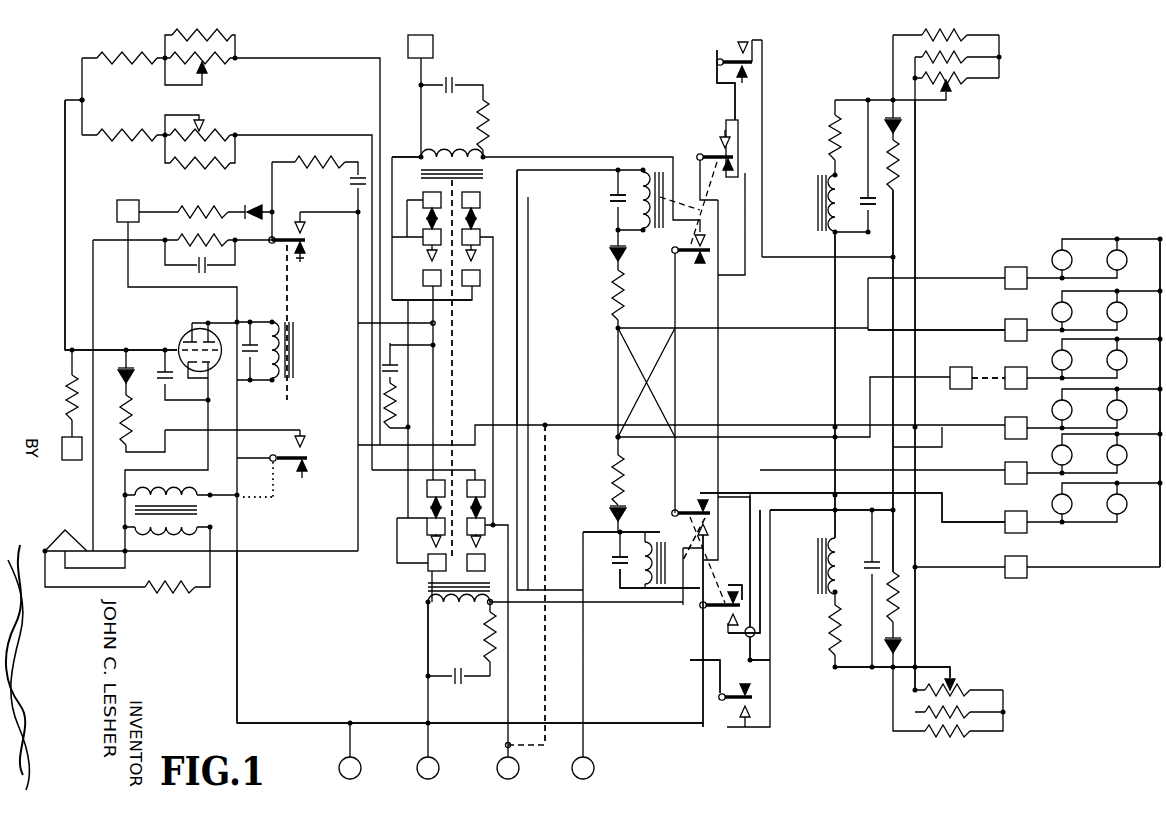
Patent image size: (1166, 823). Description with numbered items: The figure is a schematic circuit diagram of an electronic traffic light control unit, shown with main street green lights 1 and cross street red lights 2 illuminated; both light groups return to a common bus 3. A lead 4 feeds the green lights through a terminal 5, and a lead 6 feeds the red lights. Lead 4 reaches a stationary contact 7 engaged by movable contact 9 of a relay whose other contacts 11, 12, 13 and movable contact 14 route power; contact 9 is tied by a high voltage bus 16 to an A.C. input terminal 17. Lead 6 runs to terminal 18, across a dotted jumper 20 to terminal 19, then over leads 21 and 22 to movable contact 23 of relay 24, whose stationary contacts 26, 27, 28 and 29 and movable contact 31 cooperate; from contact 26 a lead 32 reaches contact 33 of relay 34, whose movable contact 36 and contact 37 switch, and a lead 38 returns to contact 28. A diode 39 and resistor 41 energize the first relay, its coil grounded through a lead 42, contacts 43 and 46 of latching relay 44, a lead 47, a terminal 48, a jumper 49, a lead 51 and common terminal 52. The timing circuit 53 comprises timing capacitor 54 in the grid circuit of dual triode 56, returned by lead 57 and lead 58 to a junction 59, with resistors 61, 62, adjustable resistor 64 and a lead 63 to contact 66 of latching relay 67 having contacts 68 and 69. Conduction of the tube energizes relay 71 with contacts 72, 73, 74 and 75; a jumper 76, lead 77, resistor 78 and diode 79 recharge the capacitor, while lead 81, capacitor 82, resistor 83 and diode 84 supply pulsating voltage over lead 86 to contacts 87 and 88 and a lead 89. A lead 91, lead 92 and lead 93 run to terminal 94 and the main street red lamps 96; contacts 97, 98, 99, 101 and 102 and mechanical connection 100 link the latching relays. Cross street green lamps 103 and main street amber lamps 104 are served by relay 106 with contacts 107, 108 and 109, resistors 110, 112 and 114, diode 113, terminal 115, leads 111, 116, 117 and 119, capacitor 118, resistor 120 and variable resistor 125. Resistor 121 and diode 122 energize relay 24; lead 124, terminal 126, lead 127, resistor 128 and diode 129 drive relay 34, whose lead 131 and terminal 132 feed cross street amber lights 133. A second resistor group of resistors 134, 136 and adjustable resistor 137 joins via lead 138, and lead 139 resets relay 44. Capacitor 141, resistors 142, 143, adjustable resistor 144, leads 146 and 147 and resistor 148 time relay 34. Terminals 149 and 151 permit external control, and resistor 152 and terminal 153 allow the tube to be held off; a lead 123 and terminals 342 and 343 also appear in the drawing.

The green lights 1 is at (1102, 398).
The red lights 2 is at (1107, 347).
The common bus 3 is at (1160, 382).
The lead 4 is at (724, 632).
The terminal 5 is at (1014, 416).
The lead 6 is at (1061, 378).
The stationary contact 7 is at (704, 618).
The first movable contact 9 is at (738, 614).
The stationary contact 11 is at (738, 590).
The stationary contact 12 is at (710, 526).
The stationary contact 13 is at (701, 502).
The movable contact 14 is at (674, 512).
The high voltage bus 16 is at (237, 624).
The A.C. input terminal 17 is at (360, 758).
The terminal 18 is at (1014, 366).
The terminal 19 is at (966, 360).
The jumper 20 is at (984, 376).
The lead 21 is at (640, 437).
The lead 22 is at (669, 364).
The movable contact 23 is at (675, 264).
The relay 24 is at (636, 217).
The stationary contact 26 is at (700, 268).
The stationary contact 27 is at (707, 242).
The stationary contact 28 is at (729, 164).
The stationary contact 29 is at (724, 140).
The movable contact 31 is at (700, 154).
The lead 32 is at (728, 159).
The stationary contact 33 is at (746, 70).
The relay 34 is at (842, 192).
The movable contact 36 is at (718, 60).
The stationary contact 37 is at (740, 42).
The lead 38 is at (732, 102).
The diode 39 is at (614, 508).
The resistor 41 is at (614, 472).
The lead 42 is at (527, 280).
The stationary contact 43 is at (478, 195).
The latching relay 44 is at (452, 152).
The movable contact 46 is at (480, 234).
The lead 47 is at (499, 646).
The terminal 48 is at (518, 768).
The jumper 49 is at (546, 493).
The lead 51 is at (92, 314).
The common terminal 52 is at (1022, 556).
The timing circuit 53 is at (190, 326).
The timing capacitor 54 is at (136, 394).
The dual triode 56 is at (178, 324).
The lead 57 is at (160, 480).
The lead 58 is at (56, 199).
The junction 59 is at (90, 100).
The resistor 61 is at (118, 126).
The resistor 62 is at (191, 170).
The lead 63 is at (291, 136).
The adjustable resistor 64 is at (212, 122).
The stationary contact 66 is at (476, 480).
The latching relay 67 is at (447, 639).
The movable contact 68 is at (482, 508).
The stationary contact 69 is at (475, 546).
The relay 71 is at (265, 335).
The stationary contact 72 is at (304, 441).
The movable contact 73 is at (306, 460).
The movable contact 74 is at (309, 242).
The stationary contact 75 is at (307, 228).
The jumper 76 is at (278, 497).
The lead 77 is at (246, 428).
The resistor 78 is at (150, 423).
The diode 79 is at (150, 376).
The lead 81 is at (240, 297).
The capacitor 82 is at (122, 198).
The resistor 83 is at (204, 204).
The diode 84 is at (252, 207).
The lead 86 is at (303, 212).
The stationary contact 87 is at (427, 485).
The movable contact 88 is at (424, 517).
The lead 89 is at (394, 580).
The lead 91 is at (595, 606).
The lead 92 is at (680, 488).
The lead 93 is at (788, 328).
The terminal 94 is at (1006, 266).
The main street red lamps 96 is at (1085, 255).
The stationary contact 97 is at (410, 592).
The stationary contact 98 is at (482, 274).
The movable contact 99 is at (423, 234).
The mechanical connection 100 is at (452, 360).
The stationary contact 101 is at (426, 188).
The stationary contact 102 is at (422, 288).
The cross street green lamps 103 is at (1073, 313).
The main street amber lamps 104 is at (1100, 496).
The relay 106 is at (852, 554).
The stationary contact 107 is at (742, 714).
The stationary contact 108 is at (753, 688).
The movable contact 109 is at (753, 714).
The resistor 110 is at (955, 742).
The lead 111 is at (846, 450).
The resistor 112 is at (832, 642).
The diode 113 is at (906, 647).
The resistor 114 is at (908, 616).
The terminal 115 is at (1018, 512).
The lead 116 is at (742, 584).
The lead 117 is at (762, 624).
The capacitor 118 is at (911, 548).
The lead 119 is at (732, 494).
The resistor 120 is at (978, 700).
The resistor 121 is at (624, 304).
The diode 122 is at (610, 254).
The conductor 123 is at (538, 172).
The lead 124 is at (778, 258).
The variable resistor 125 is at (964, 676).
The terminal 126 is at (1010, 318).
The lead 127 is at (894, 224).
The resistor 128 is at (900, 164).
The diode 129 is at (902, 126).
The lead 131 is at (757, 102).
The terminal 132 is at (1010, 464).
The cross street amber lights 133 is at (1100, 448).
The resistor 134 is at (110, 54).
The resistor 136 is at (199, 24).
The adjustable resistor 137 is at (220, 66).
The lead 138 is at (298, 56).
The lead 139 is at (392, 157).
The capacitor 141 is at (868, 226).
The resistor 142 is at (962, 32).
The resistor 143 is at (968, 54).
The adjustable resistor 144 is at (960, 88).
The lead 146 is at (915, 196).
The lead 147 is at (835, 292).
The resistor 148 is at (832, 140).
The terminal 149 is at (438, 758).
The terminal 151 is at (433, 46).
The resistor 152 is at (67, 378).
The terminal 153 is at (61, 444).
The terminal 342 is at (593, 768).
The transformer 343 is at (585, 528).